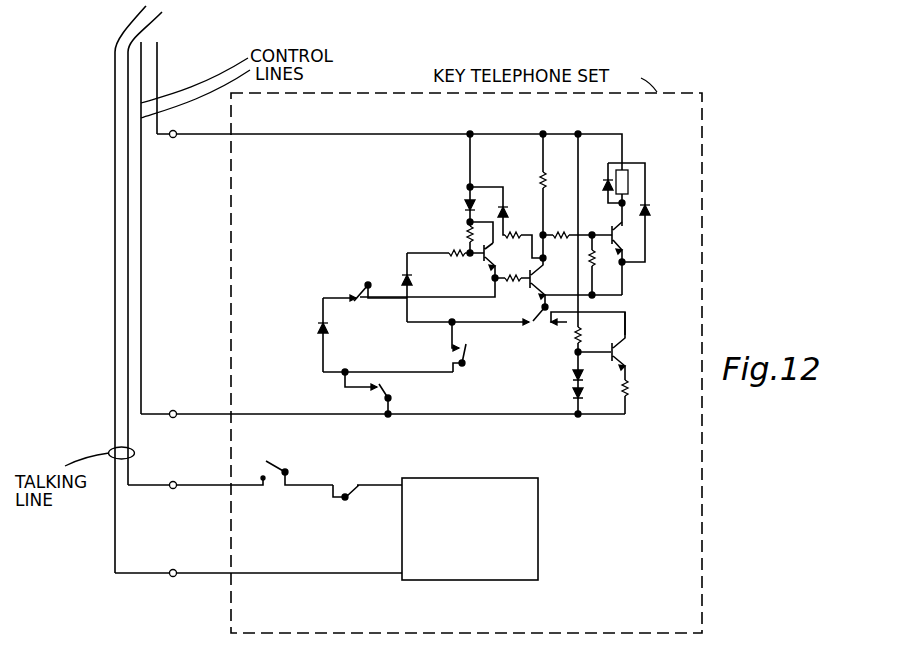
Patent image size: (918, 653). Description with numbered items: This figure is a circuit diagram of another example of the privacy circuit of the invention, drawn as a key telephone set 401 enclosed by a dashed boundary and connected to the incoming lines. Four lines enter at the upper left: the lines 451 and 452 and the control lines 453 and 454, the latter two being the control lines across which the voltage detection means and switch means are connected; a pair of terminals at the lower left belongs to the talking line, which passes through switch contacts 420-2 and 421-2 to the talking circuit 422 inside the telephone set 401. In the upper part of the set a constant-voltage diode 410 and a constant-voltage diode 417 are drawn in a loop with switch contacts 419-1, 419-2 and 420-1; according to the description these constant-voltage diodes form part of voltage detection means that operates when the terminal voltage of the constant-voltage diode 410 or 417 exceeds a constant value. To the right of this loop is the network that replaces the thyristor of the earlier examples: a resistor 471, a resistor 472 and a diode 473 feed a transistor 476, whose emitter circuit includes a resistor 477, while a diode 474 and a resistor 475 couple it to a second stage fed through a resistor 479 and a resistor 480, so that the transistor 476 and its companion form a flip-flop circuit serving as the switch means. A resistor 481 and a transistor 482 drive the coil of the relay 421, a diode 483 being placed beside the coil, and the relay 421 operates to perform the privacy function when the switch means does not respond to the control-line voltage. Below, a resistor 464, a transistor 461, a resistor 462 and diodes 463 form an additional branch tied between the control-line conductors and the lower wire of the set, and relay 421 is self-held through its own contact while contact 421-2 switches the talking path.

The telephone set 401 is at (384, 93).
The constant-voltage diode 410 is at (414, 284).
The constant-voltage diode 417 is at (331, 332).
The switch contact 419-1 is at (368, 282).
The switch contact 419-2 is at (465, 356).
The switch contact 420-1 is at (393, 396).
The switch contact 420-2 is at (272, 466).
The relay 421 is at (630, 181).
The relay contact 421-2 is at (345, 483).
The talking circuit 422 is at (514, 478).
The control line 451 is at (153, 245).
The control line 452 is at (142, 286).
The control line 453 is at (157, 72).
The control line 454 is at (157, 97).
The transistor 461 is at (627, 351).
The resistor 462 is at (630, 386).
The diodes 463 is at (584, 381).
The resistor 464 is at (574, 340).
The resistor 471 is at (449, 250).
The resistor 472 is at (464, 222).
The diode 473 is at (465, 200).
The diode 474 is at (505, 208).
The resistor 475 is at (518, 233).
The transistor 476 is at (497, 257).
The resistor 477 is at (510, 281).
The resistor 479 is at (556, 181).
The resistor 480 is at (561, 226).
The resistor 481 is at (601, 256).
The transistor 482 is at (629, 235).
The diode 483 is at (657, 206).